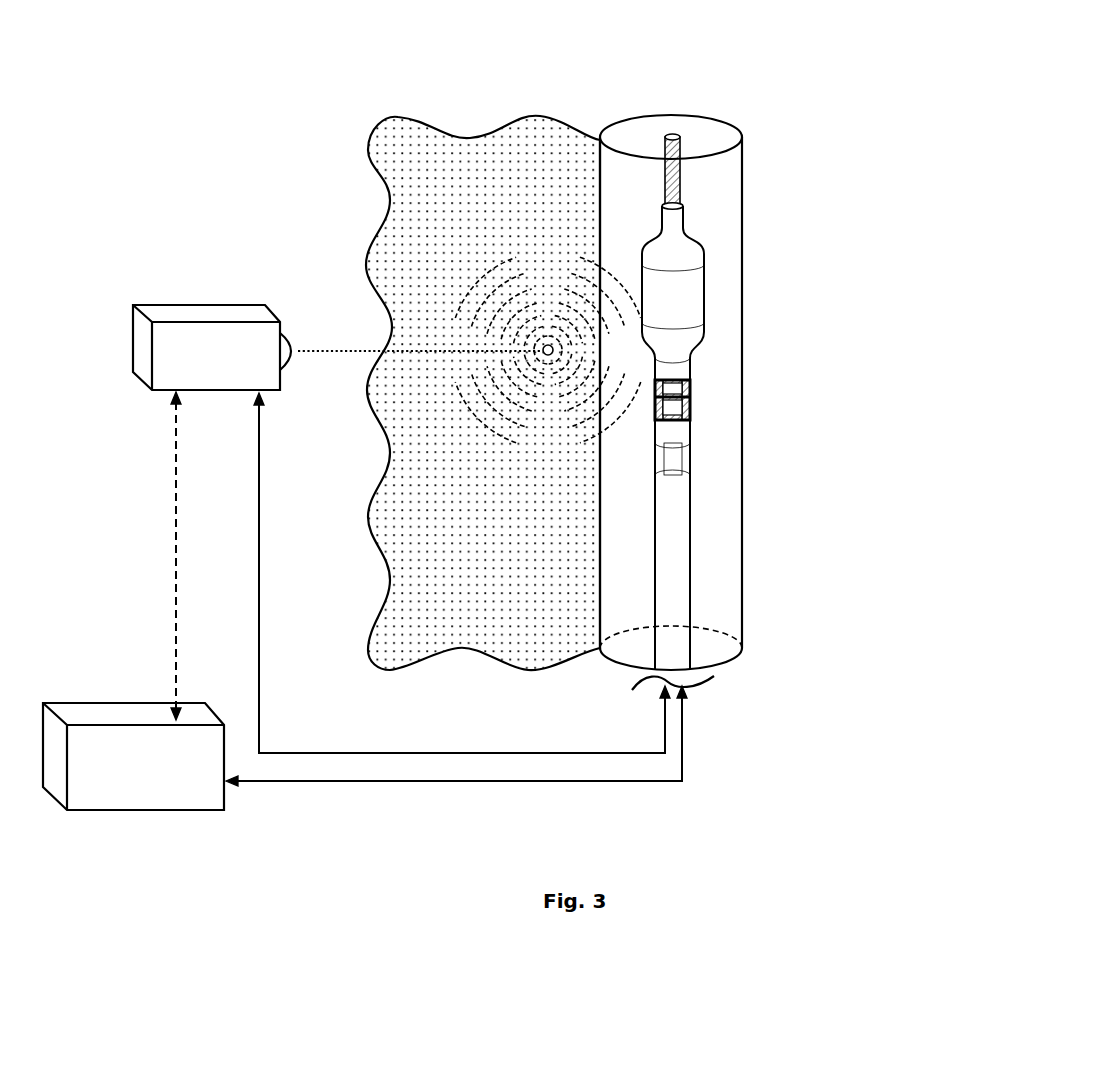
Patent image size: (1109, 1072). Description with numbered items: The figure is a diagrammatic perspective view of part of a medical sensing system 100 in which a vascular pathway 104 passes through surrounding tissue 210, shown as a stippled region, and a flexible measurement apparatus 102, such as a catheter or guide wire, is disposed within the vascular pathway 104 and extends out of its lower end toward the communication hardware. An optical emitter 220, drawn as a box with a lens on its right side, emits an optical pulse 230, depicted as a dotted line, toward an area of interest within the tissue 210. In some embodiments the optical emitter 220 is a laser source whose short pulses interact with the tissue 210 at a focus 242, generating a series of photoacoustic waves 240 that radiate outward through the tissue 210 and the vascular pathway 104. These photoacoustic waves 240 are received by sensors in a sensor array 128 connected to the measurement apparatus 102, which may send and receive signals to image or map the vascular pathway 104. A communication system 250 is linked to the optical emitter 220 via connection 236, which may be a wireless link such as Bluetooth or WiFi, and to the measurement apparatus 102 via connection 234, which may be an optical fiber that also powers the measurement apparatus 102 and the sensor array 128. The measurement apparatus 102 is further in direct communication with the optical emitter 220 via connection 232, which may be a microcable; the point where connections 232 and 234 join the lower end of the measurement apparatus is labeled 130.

The medical sensing system 100 is at (868, 511).
The measurement apparatus 102 is at (736, 291).
The vascular pathway 104 is at (742, 205).
The sensor array 128 is at (700, 402).
The wireline cable 130 is at (707, 721).
The tissue 210 is at (372, 141).
The optical emitter 220 is at (178, 313).
The optical pulse 230 is at (372, 351).
The connection 232 is at (473, 753).
The connection 234 is at (392, 783).
The connection 236 is at (175, 492).
The photoacoustic waves 240 is at (489, 279).
The focus 242 is at (550, 358).
The communication system 250 is at (112, 712).